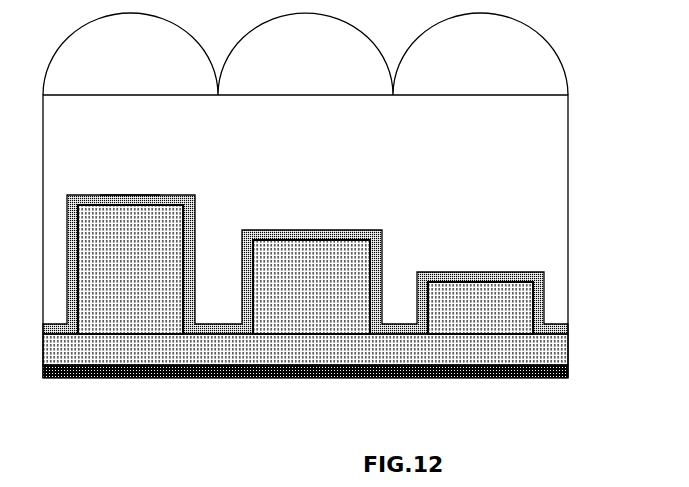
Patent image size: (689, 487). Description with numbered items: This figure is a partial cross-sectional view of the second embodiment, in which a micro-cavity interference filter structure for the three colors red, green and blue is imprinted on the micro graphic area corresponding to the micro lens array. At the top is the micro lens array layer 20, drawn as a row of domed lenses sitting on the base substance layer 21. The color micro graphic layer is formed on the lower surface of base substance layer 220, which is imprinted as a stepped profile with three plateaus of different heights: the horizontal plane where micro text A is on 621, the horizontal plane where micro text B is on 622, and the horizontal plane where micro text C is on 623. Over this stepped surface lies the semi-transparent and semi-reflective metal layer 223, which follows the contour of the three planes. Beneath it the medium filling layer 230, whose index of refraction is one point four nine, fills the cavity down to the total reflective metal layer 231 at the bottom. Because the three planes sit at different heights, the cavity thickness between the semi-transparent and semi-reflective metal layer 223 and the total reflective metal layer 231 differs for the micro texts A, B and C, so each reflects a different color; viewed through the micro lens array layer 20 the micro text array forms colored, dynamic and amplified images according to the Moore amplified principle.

The micro lens array layer 20 is at (559, 58).
The base substance layer 21 is at (568, 160).
The semi-transparent and semi-reflective metal layer 223 is at (126, 195).
The horizontal plane where micro text A is on 621 is at (195, 195).
The horizontal plane where micro text B is on 622 is at (382, 230).
The horizontal plane where micro text C is on 623 is at (544, 272).
The lower surface of base substance layer 220 is at (568, 324).
The medium filling layer 230 is at (568, 352).
The total reflective metal layer 231 is at (568, 372).